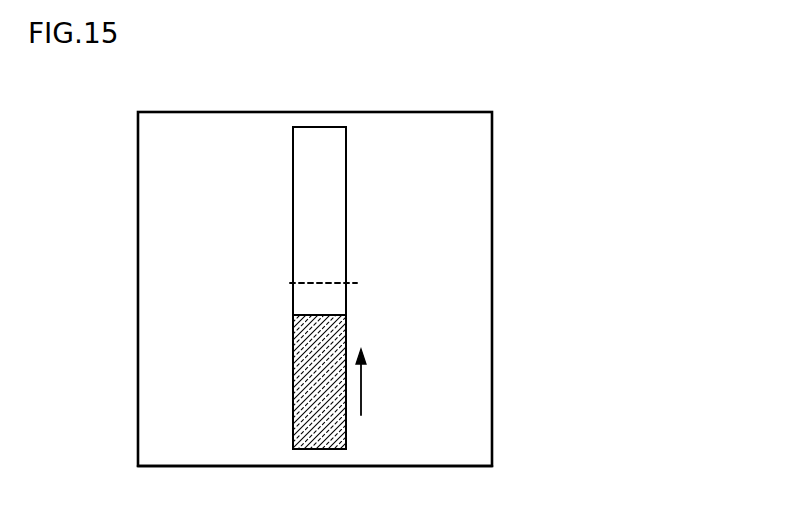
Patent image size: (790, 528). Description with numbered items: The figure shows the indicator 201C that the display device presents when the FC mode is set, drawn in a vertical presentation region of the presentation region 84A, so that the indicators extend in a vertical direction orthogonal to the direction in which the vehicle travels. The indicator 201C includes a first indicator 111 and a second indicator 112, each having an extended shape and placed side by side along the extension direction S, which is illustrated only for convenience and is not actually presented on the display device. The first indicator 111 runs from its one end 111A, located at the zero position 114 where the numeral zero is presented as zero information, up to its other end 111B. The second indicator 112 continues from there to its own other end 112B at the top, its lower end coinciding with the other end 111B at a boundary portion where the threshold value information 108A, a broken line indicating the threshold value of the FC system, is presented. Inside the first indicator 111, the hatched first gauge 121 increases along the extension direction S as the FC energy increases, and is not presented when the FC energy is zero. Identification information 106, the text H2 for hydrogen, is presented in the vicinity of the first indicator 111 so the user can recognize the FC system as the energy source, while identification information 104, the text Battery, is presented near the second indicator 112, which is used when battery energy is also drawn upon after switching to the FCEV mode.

The presentation region 84A is at (452, 112).
The second indicator 112 is at (346, 205).
The other end of second indicator 112B is at (317, 127).
The indicator 201C is at (357, 153).
The identification information 104 is at (203, 208).
The threshold value information 108A is at (288, 283).
The other end of first indicator 111B is at (346, 298).
The first gauge 121 is at (330, 427).
The identification information 106 is at (248, 383).
The first indicator 111 is at (292, 413).
The extension direction S is at (361, 388).
The zero position 114 is at (267, 450).
The one end of first indicator 111A is at (312, 449).